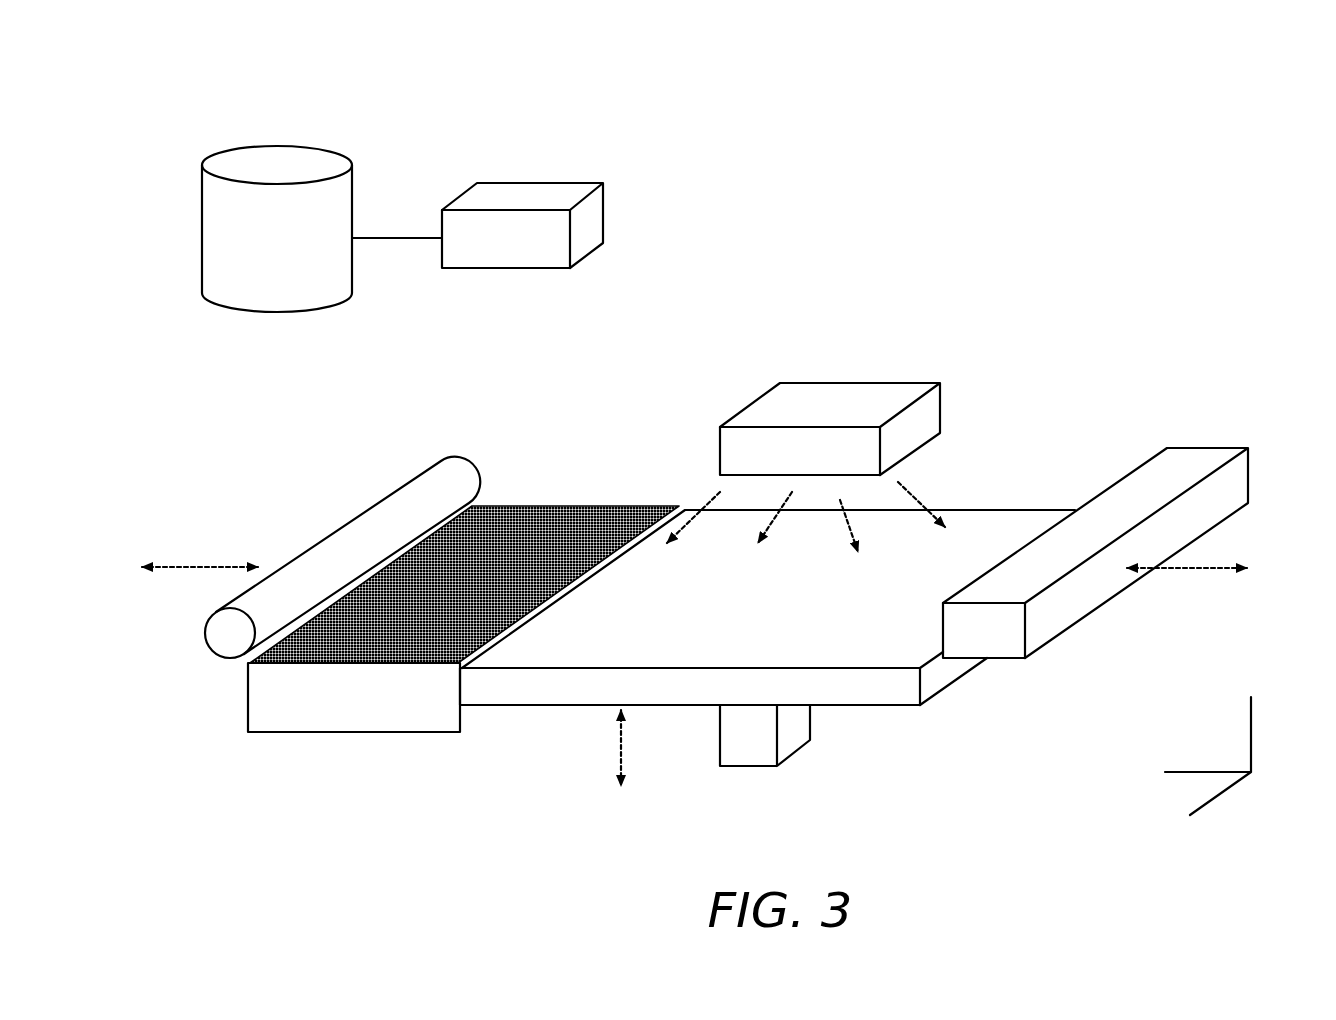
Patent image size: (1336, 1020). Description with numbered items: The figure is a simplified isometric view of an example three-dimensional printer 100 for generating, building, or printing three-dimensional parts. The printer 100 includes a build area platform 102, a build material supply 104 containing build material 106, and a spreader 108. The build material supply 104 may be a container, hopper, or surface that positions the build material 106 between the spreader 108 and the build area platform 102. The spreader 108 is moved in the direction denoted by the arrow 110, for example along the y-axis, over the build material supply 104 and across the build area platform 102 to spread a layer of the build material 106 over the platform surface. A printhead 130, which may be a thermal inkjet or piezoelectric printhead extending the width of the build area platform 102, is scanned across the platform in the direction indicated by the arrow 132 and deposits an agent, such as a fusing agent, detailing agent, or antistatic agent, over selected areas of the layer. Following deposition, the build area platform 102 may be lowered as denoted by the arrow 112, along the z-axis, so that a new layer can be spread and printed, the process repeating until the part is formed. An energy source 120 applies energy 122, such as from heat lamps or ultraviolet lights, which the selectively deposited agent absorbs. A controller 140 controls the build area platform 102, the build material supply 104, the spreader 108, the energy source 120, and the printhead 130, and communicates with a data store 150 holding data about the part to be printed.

The 3D printer 100 is at (300, 89).
The build area platform 102 is at (882, 707).
The build material supply 104 is at (323, 733).
The build material 106 is at (270, 665).
The spreader 108 is at (313, 543).
The arrow 110 is at (207, 558).
The arrow 112 is at (623, 770).
The energy source 120 is at (838, 383).
The energy 122 is at (707, 505).
The printhead 130 is at (1212, 448).
The arrow 132 is at (1190, 568).
The controller 140 is at (547, 183).
The data store 150 is at (299, 284).